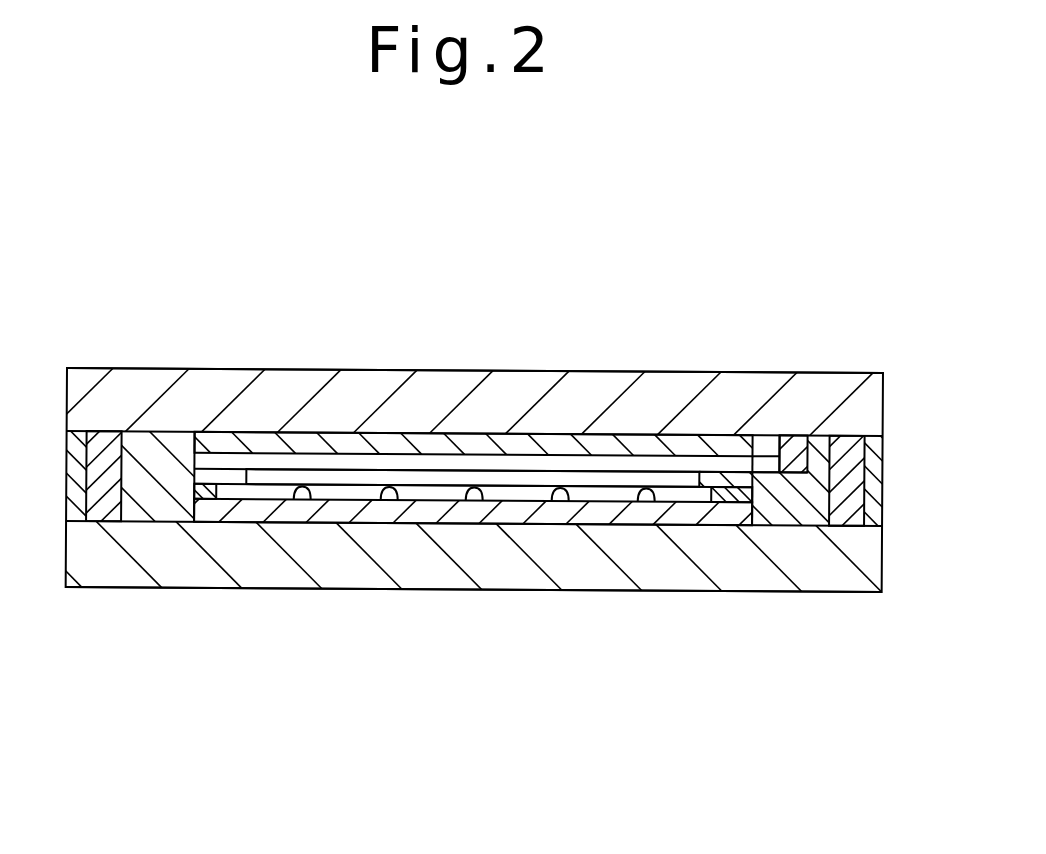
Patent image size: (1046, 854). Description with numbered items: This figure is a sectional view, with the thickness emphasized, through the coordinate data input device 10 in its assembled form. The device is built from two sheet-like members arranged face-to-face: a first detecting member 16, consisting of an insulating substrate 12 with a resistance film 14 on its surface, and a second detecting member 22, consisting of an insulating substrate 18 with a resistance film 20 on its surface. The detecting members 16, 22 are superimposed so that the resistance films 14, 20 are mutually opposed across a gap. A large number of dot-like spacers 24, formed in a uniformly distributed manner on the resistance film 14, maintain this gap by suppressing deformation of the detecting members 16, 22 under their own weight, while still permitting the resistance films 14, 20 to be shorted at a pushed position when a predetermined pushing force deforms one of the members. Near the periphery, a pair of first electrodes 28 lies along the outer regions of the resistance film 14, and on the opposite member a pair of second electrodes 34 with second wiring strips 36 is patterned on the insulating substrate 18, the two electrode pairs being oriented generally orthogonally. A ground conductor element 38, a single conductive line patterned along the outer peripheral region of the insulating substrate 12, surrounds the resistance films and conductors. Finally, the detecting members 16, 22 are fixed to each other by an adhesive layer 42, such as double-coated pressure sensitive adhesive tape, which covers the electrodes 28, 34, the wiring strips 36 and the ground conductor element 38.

The coordinate data input device 10 is at (331, 243).
The insulating substrate 12 is at (592, 563).
The resistance film 14 is at (302, 500).
The first detecting member 16 is at (415, 603).
The insulating substrate 18 is at (612, 385).
The resistance film 20 is at (380, 440).
The second detecting member 22 is at (468, 356).
The dot-like spacers 24 is at (558, 502).
The first electrodes 28 is at (215, 498).
The second electrodes 34 is at (300, 462).
The second wiring strips 36 is at (793, 447).
The ground conductor element 38 is at (100, 510).
The adhesive layer 42 is at (883, 495).